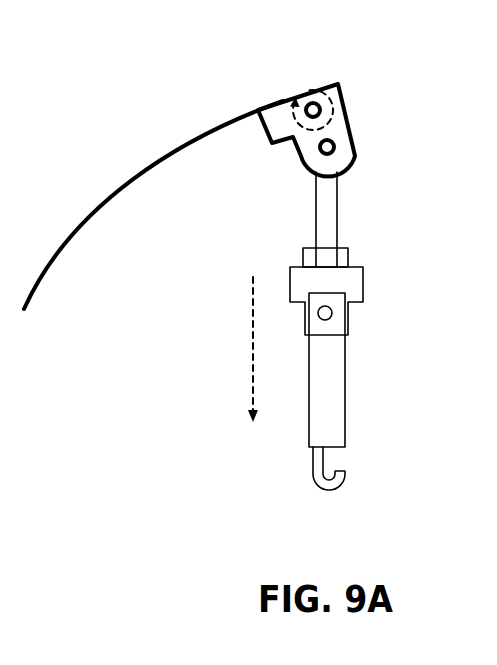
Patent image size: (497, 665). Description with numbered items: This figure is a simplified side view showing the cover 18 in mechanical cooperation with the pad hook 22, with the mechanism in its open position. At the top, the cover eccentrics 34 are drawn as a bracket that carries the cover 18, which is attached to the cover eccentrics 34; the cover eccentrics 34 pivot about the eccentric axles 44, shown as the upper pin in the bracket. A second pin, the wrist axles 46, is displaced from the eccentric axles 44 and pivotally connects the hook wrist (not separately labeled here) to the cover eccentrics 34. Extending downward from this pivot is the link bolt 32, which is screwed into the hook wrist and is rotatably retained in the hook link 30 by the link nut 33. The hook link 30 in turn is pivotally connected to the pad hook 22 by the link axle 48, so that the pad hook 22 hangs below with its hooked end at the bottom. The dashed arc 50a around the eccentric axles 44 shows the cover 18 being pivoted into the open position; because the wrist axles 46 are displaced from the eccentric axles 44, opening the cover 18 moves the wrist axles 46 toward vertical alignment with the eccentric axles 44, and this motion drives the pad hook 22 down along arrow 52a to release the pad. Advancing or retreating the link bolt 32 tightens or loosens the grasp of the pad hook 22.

The cover 18 is at (153, 172).
The pad hook 22 is at (327, 367).
The hook link 30 is at (330, 283).
The link bolt 32 is at (328, 200).
The link nut 33 is at (328, 258).
The cover eccentrics 34 is at (349, 129).
The eccentric axles 44 is at (312, 102).
The wrist axles 46 is at (338, 148).
The link axle 48 is at (330, 315).
The arc 50a is at (292, 104).
The arrow 52a is at (252, 352).